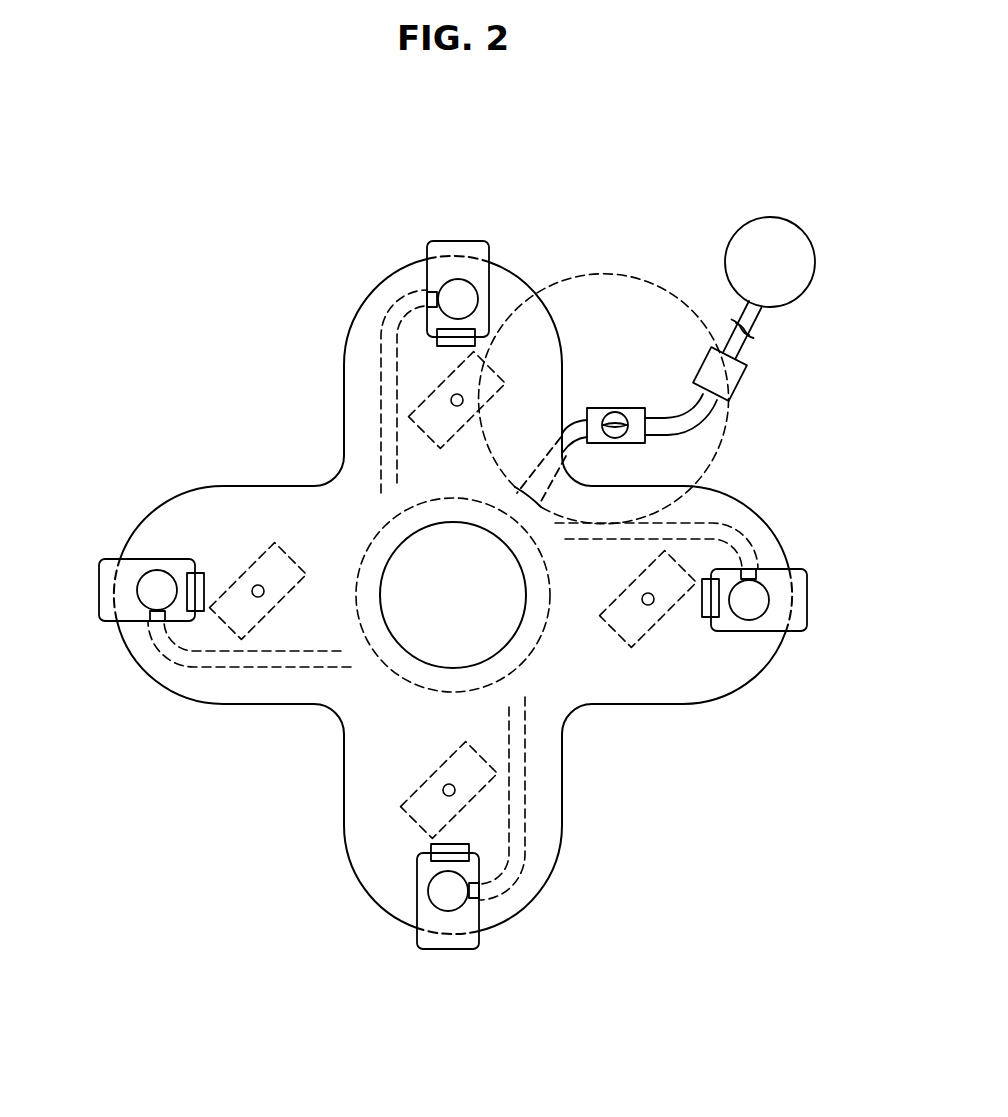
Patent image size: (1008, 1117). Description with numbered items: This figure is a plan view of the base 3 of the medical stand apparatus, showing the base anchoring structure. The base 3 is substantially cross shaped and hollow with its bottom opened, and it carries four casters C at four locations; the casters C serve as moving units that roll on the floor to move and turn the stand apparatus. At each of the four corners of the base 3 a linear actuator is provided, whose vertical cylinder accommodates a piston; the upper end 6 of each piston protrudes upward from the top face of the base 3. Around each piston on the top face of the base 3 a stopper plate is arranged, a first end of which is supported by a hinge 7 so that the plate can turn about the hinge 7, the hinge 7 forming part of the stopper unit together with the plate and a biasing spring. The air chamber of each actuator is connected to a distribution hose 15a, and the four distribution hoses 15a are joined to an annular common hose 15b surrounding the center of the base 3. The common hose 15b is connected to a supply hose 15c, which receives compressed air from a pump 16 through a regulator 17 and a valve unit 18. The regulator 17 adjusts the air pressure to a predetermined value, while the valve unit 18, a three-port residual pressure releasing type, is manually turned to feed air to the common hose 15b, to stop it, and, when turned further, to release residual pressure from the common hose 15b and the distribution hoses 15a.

The base 3 is at (345, 812).
The upper end of the piston 6 is at (466, 299).
The hinge 7 is at (455, 348).
The distribution hose 15a is at (380, 432).
The annular common hose 15b is at (548, 670).
The supply hose 15c is at (727, 328).
The pump 16 is at (741, 228).
The regulator 17 is at (745, 388).
The valve unit 18 is at (617, 408).
The caster C is at (454, 594).